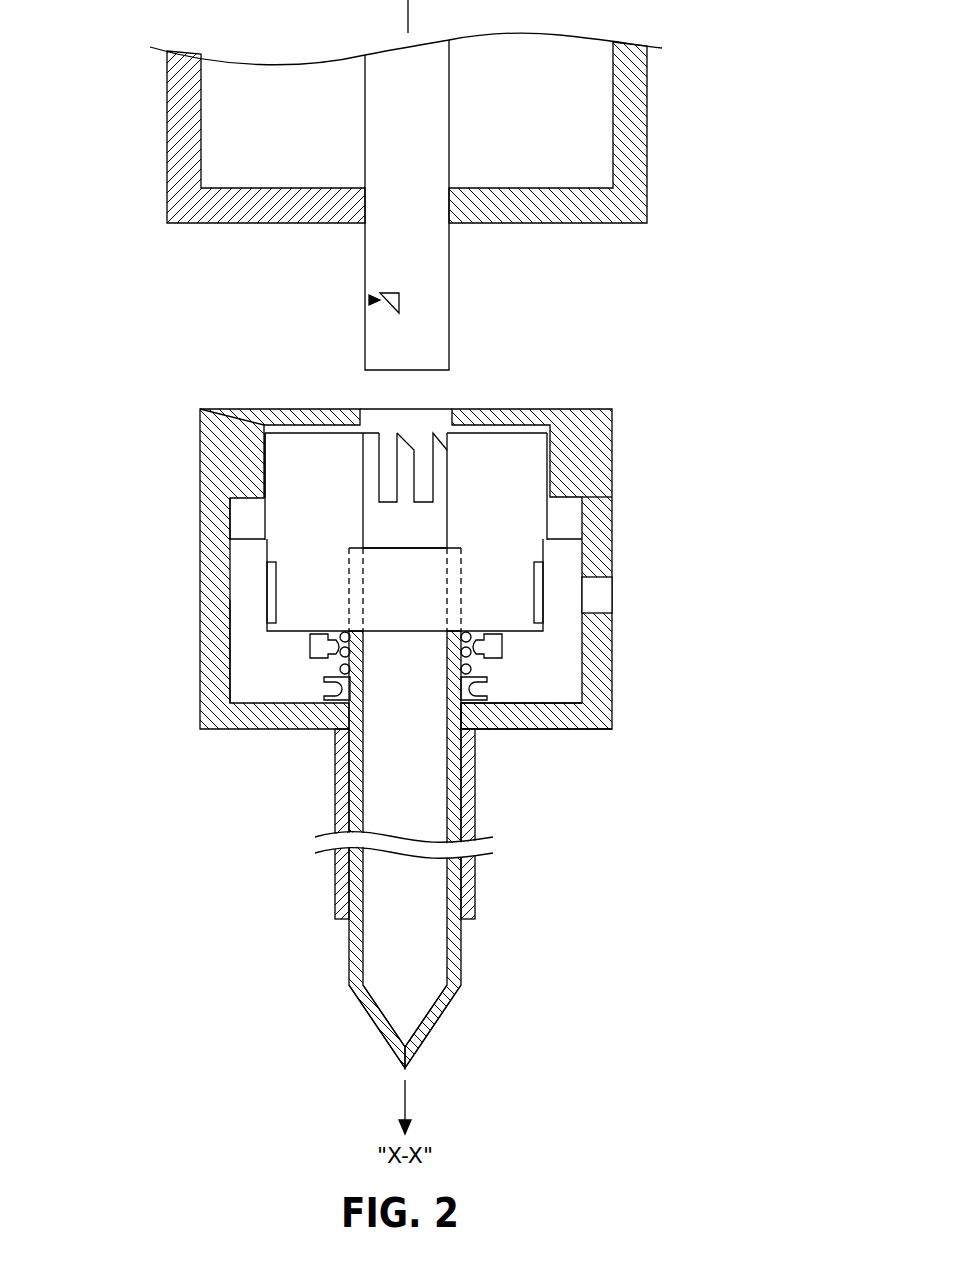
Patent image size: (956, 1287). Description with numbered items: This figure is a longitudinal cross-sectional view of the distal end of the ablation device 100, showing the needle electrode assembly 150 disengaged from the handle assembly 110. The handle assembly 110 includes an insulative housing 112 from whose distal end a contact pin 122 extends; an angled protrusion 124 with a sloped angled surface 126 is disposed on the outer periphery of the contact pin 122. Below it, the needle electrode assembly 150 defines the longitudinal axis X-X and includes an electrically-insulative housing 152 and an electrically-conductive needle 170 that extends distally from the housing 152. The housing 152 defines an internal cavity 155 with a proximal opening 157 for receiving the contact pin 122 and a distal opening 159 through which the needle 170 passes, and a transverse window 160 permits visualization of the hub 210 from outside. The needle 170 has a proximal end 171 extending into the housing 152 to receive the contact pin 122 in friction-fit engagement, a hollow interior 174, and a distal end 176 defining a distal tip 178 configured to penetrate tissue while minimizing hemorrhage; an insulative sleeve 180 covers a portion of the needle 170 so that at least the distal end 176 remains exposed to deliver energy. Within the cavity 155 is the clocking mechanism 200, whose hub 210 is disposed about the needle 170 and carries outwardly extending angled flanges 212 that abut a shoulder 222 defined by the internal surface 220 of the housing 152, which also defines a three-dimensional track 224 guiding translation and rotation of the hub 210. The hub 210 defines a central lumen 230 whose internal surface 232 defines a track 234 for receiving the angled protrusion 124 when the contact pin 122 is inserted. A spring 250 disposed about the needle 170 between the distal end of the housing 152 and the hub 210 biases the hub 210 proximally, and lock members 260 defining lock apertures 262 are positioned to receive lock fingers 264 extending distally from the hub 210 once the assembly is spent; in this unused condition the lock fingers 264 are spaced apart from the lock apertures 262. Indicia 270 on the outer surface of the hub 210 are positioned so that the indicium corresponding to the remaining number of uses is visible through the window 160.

The ablation device 100 is at (461, 185).
The handle assembly 110 is at (167, 103).
The housing 112 is at (648, 103).
The contact pin 122 is at (451, 103).
The angled protrusion 124 is at (400, 302).
The angled surface 126 is at (370, 300).
The needle electrode assembly 150 is at (463, 730).
The housing 152 is at (485, 671).
The internal cavity 155 is at (250, 679).
The proximal opening 157 is at (442, 408).
The distal opening 159 is at (517, 730).
The transverse window 160 is at (606, 590).
The needle 170 is at (462, 975).
The proximal end 171 is at (457, 562).
The hollow interior 174 is at (432, 930).
The distal end 176 is at (355, 965).
The distal tip 178 is at (405, 1069).
The insulative sleeve 180 is at (476, 775).
The clocking mechanism 200 is at (562, 640).
The hub 210 is at (500, 515).
The angled flanges 212 is at (590, 540).
The internal surface 220 is at (400, 574).
The shoulder 222 is at (240, 482).
The three-dimensional track 224 is at (230, 563).
The central lumen 230 is at (478, 454).
The internal surface 232 is at (377, 526).
The track 234 is at (380, 470).
The spring 250 is at (540, 712).
The lock members 260 is at (421, 866).
The lock apertures 262 is at (323, 690).
The lock fingers 264 is at (502, 647).
The indicia 270 is at (267, 612).